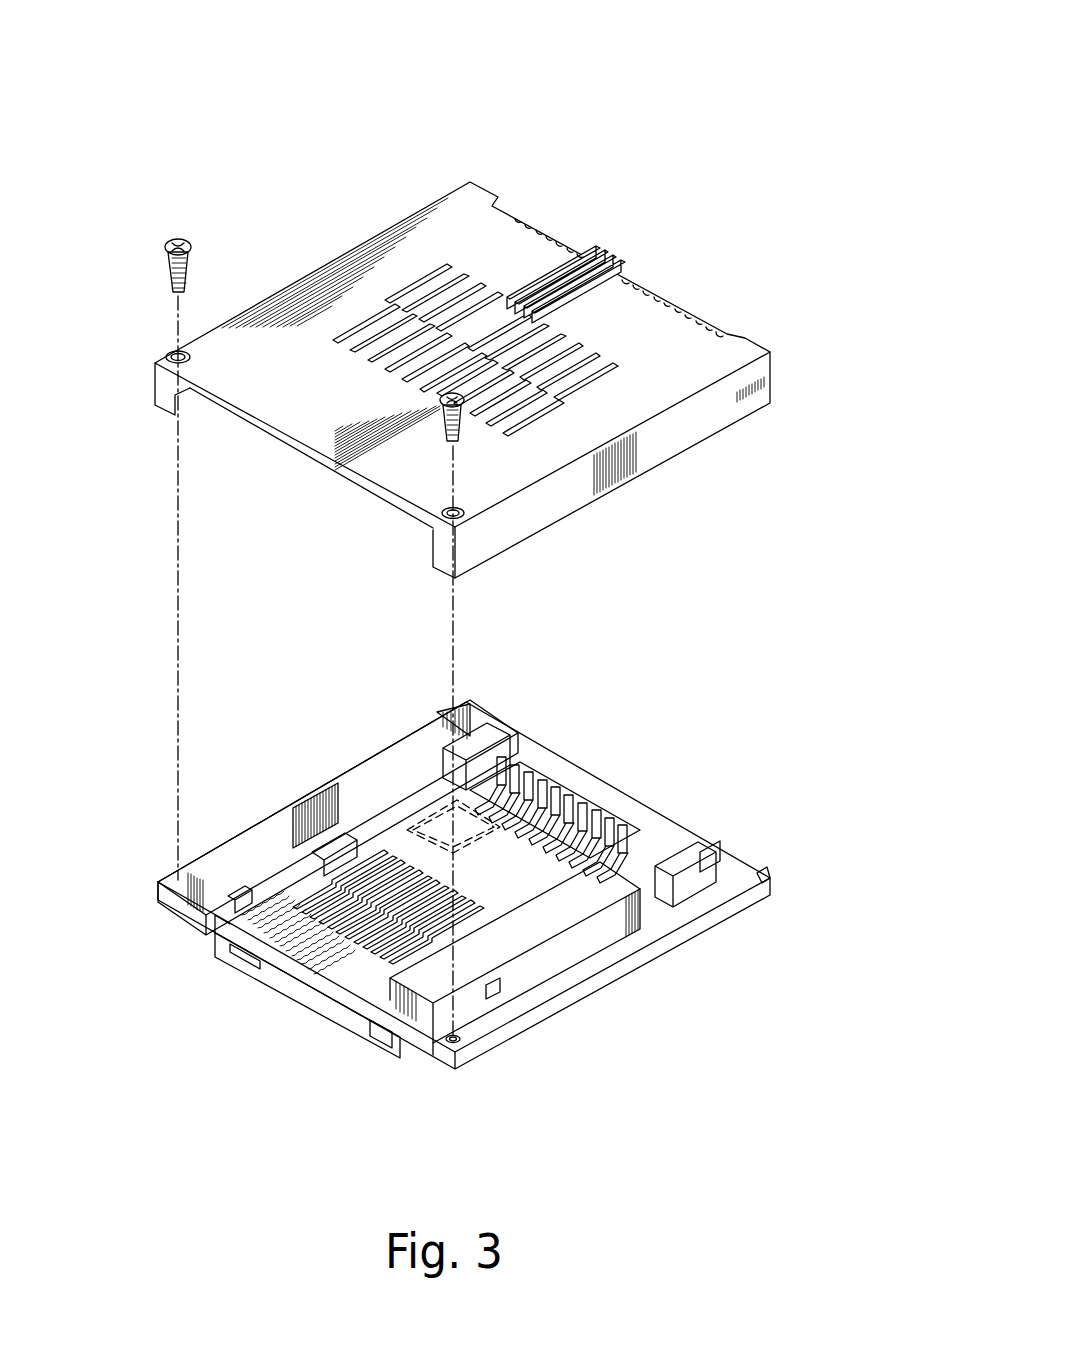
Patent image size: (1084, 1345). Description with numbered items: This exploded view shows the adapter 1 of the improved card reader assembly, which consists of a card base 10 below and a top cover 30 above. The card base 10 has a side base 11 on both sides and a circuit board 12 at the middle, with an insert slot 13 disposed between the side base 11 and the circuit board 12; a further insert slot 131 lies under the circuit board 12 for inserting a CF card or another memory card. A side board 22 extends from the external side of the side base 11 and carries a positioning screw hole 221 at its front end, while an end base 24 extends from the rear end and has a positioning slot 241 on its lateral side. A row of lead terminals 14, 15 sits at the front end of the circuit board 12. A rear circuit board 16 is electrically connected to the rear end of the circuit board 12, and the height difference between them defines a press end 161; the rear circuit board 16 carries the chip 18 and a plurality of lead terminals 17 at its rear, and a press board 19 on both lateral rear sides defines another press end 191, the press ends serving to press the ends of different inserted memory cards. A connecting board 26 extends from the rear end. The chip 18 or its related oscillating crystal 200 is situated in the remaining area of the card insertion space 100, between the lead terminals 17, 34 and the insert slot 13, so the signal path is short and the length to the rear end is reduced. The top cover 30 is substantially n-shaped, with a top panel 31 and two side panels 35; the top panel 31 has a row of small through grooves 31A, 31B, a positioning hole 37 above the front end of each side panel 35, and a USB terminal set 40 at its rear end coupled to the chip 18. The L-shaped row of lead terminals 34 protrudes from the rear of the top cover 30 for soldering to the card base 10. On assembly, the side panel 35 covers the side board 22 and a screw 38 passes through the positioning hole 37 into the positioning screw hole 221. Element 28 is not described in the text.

The adapter 1 is at (145, 220).
The card base 10 is at (763, 912).
The card insertion space 100 is at (590, 875).
The side base 11 is at (230, 853).
The circuit board 12 is at (233, 927).
The insert slot 13 is at (317, 973).
The insert slot 131 is at (250, 957).
The lead terminal 14 is at (345, 987).
The lead terminal 15 is at (493, 992).
The rear circuit board 16 is at (560, 945).
The press end 161 is at (340, 790).
The lead terminal 17 is at (550, 837).
The chip 18 is at (403, 817).
The press board 19 is at (503, 770).
The press end 191 is at (443, 783).
The oscillating crystal 200 is at (520, 837).
The side board 22 is at (470, 1033).
The positioning screw hole 221 is at (435, 1047).
The end base 24 is at (687, 837).
The positioning slot 241 is at (470, 715).
The connecting board 26 is at (768, 871).
The positioning post 28 is at (233, 928).
The top cover 30 is at (745, 476).
The top panel 31 is at (385, 237).
The small through groove 31A is at (603, 390).
The small through groove 31B is at (540, 430).
The lead terminal 34 is at (640, 283).
The side panel 35 is at (480, 550).
The positioning hole 37 is at (170, 352).
The screw 38 is at (190, 265).
The USB terminal set 40 is at (558, 262).